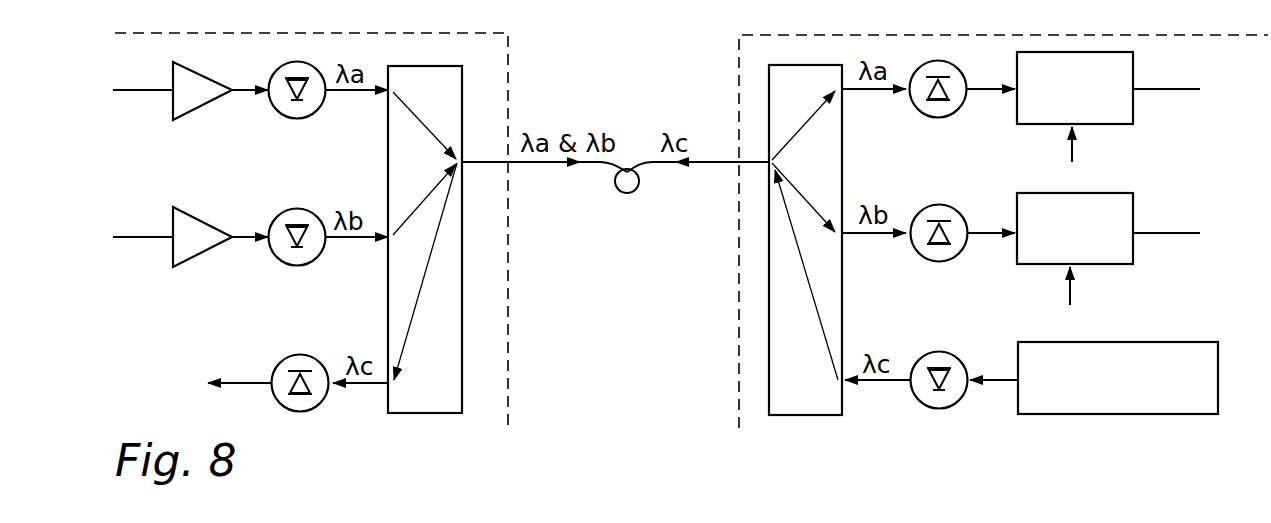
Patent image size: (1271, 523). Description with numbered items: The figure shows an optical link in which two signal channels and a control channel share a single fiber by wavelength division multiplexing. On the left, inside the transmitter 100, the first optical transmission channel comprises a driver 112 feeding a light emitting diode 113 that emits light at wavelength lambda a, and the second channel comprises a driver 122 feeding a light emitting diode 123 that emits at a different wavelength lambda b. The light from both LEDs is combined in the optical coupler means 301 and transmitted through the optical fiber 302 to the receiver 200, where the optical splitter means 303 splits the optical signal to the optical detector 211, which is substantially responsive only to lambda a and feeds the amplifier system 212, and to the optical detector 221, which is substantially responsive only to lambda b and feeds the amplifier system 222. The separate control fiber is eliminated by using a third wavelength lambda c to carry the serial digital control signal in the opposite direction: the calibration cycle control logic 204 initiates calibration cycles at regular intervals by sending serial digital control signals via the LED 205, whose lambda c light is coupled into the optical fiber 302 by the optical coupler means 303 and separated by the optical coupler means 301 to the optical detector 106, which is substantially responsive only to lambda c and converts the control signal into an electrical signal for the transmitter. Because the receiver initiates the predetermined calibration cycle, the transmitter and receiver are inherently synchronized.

The transmitter 100 is at (510, 348).
The receiver 200 is at (738, 350).
The driver 112 is at (200, 107).
The light emitting diode 113 is at (276, 69).
The driver 122 is at (200, 255).
The light emitting diode 123 is at (278, 212).
The optical detector 106 is at (286, 358).
The optical coupler means 301 is at (387, 214).
The optical fiber 302 is at (608, 198).
The optical splitter means 303 is at (845, 185).
The optical detector 211 is at (960, 107).
The amplifier system 212 is at (1135, 73).
The optical detector 221 is at (920, 262).
The amplifier system 222 is at (1135, 205).
The LED 205 is at (951, 356).
The calibration cycle control logic 204 is at (1135, 340).